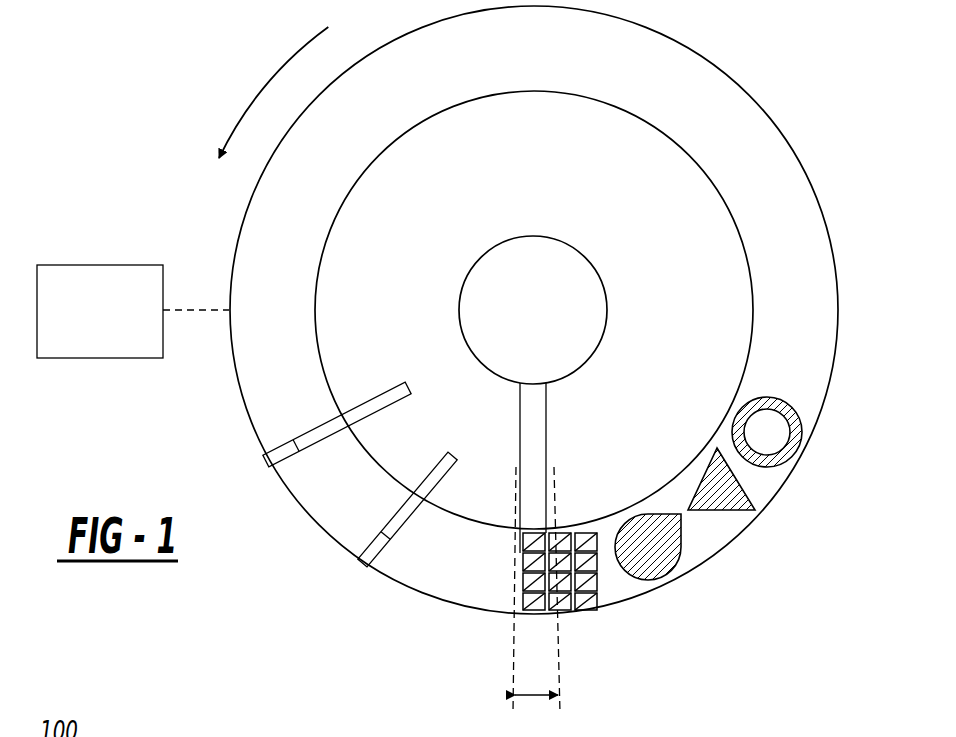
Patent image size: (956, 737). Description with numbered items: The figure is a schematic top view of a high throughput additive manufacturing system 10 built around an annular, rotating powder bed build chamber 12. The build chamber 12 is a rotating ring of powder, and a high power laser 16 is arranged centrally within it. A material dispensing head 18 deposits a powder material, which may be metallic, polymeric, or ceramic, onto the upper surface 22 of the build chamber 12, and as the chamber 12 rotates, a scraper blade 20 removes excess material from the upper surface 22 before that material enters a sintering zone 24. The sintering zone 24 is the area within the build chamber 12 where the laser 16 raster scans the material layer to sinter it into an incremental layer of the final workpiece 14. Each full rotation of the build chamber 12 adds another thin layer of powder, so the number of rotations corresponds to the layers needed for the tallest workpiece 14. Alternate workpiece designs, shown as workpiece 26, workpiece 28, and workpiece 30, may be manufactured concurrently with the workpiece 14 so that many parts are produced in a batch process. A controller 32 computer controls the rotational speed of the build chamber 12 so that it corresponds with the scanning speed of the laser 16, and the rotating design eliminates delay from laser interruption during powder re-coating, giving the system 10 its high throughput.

The additive manufacturing system 10 is at (174, 81).
The build chamber 12 is at (672, 82).
The workpiece 14 is at (548, 574).
The laser 16 is at (557, 272).
The material dispensing head 18 is at (287, 440).
The scraper blade 20 is at (395, 538).
The upper surface 22 is at (810, 272).
The sintering zone 24 is at (536, 600).
The workpiece 26 is at (653, 553).
The workpiece 28 is at (730, 493).
The workpiece 30 is at (793, 423).
The controller 32 is at (112, 264).